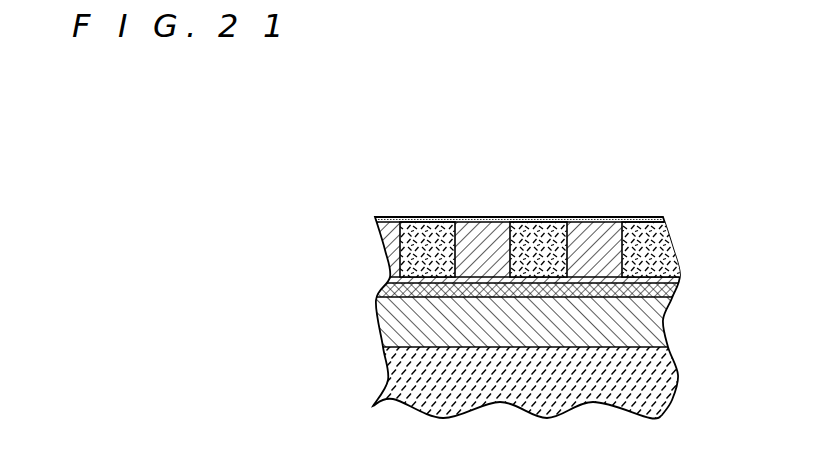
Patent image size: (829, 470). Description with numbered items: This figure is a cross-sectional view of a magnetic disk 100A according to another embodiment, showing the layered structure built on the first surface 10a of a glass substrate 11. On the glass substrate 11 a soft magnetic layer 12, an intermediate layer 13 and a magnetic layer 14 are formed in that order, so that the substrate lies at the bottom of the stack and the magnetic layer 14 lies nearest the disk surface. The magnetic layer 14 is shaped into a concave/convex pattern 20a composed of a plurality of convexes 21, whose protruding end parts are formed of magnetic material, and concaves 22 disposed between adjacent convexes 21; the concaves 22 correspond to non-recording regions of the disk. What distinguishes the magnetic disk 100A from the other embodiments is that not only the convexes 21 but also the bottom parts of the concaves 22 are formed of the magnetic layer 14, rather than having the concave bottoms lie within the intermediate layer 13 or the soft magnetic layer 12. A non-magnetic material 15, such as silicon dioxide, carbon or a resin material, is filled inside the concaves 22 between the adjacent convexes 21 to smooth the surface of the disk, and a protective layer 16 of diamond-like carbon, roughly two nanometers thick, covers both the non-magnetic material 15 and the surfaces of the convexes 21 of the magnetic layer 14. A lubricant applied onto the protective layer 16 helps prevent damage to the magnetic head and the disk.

The magnetic disk 100A is at (552, 115).
The first surface 10a is at (403, 205).
The concave/convex pattern 20a is at (567, 203).
The glass substrate 11 is at (663, 390).
The soft magnetic layer 12 is at (660, 337).
The intermediate layer 13 is at (672, 295).
The magnetic layer 14 is at (675, 277).
The non-magnetic material 15 is at (662, 228).
The protective layer 16 is at (665, 218).
The convexes 21 is at (592, 253).
The concaves 22 is at (537, 250).